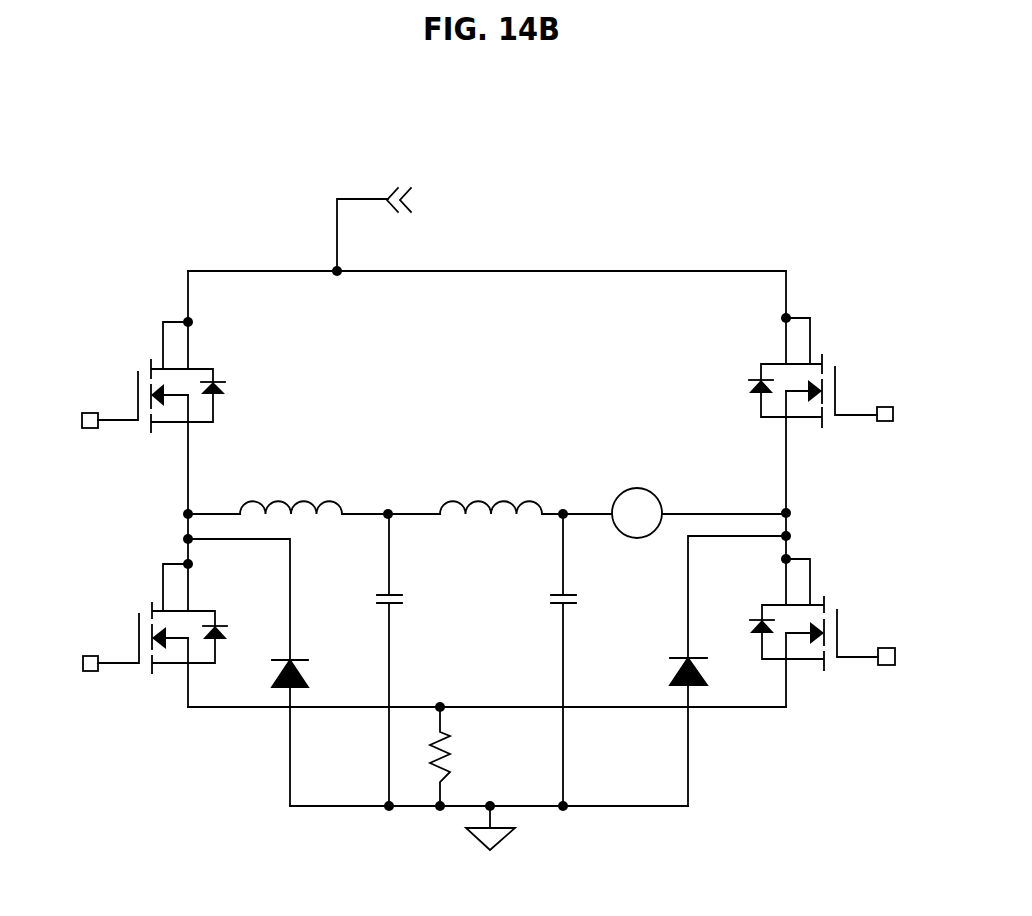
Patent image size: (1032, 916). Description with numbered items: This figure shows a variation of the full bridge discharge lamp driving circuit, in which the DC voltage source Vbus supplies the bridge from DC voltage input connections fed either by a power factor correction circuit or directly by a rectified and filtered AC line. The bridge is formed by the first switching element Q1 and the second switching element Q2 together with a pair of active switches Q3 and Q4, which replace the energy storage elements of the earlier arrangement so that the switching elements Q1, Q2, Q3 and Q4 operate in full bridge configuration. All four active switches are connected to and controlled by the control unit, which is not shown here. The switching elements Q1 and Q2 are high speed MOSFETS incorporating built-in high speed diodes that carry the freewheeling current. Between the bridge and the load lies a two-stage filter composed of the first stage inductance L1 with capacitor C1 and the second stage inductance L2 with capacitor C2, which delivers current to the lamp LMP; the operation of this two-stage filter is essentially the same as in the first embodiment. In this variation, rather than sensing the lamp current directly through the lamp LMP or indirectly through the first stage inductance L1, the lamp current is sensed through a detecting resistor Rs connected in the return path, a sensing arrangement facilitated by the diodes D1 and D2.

The DC voltage source Vbus is at (413, 229).
The first switching element Q1 is at (134, 390).
The second switching element Q2 is at (135, 638).
The active switch Q3 is at (845, 398).
The active switch Q4 is at (851, 641).
The first stage inductance L1 is at (291, 491).
The second stage inductance L2 is at (491, 491).
The lamp LMP is at (637, 497).
The first stage capacitor C1 is at (405, 660).
The second stage capacitor C2 is at (579, 660).
The diode D1 is at (302, 657).
The diode D2 is at (677, 652).
The detecting resistor Rs is at (456, 756).